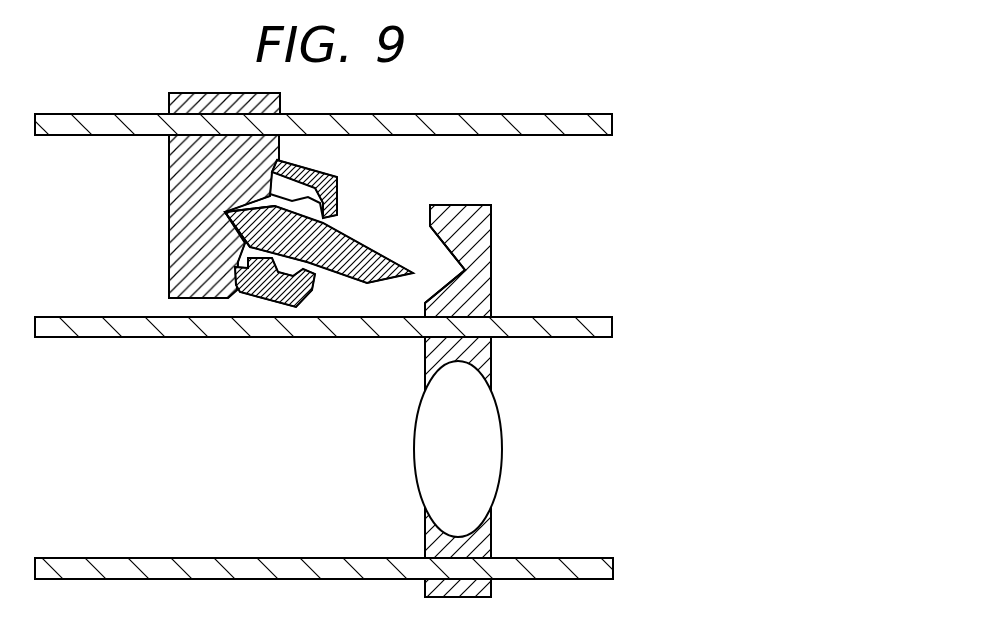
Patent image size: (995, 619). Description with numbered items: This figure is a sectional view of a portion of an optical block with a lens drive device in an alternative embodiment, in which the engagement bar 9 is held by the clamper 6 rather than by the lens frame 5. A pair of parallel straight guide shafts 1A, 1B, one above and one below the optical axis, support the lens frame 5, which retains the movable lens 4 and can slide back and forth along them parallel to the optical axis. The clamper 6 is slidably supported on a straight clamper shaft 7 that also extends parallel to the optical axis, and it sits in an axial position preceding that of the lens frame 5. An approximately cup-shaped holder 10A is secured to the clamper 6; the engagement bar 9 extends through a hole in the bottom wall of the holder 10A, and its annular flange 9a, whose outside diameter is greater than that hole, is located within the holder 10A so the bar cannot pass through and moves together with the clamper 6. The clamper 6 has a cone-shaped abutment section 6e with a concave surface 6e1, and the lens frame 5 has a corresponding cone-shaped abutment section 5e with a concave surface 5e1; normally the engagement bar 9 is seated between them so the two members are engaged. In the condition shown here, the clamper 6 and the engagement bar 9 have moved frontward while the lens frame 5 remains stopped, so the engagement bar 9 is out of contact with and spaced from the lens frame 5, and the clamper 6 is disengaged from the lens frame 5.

The guide shaft 1A is at (600, 327).
The guide shaft 1B is at (602, 568).
The movable lens 4 is at (490, 448).
The lens frame 5 is at (491, 237).
The abutment section 5e is at (424, 265).
The concave surface 5e1 is at (432, 233).
The clamper 6 is at (169, 197).
The abutment section 6e is at (250, 238).
The concave surface 6e1 is at (230, 208).
The clamper shaft 7 is at (600, 125).
The engagement bar 9 is at (255, 290).
The annular flange 9a is at (305, 292).
The holder 10A is at (323, 173).